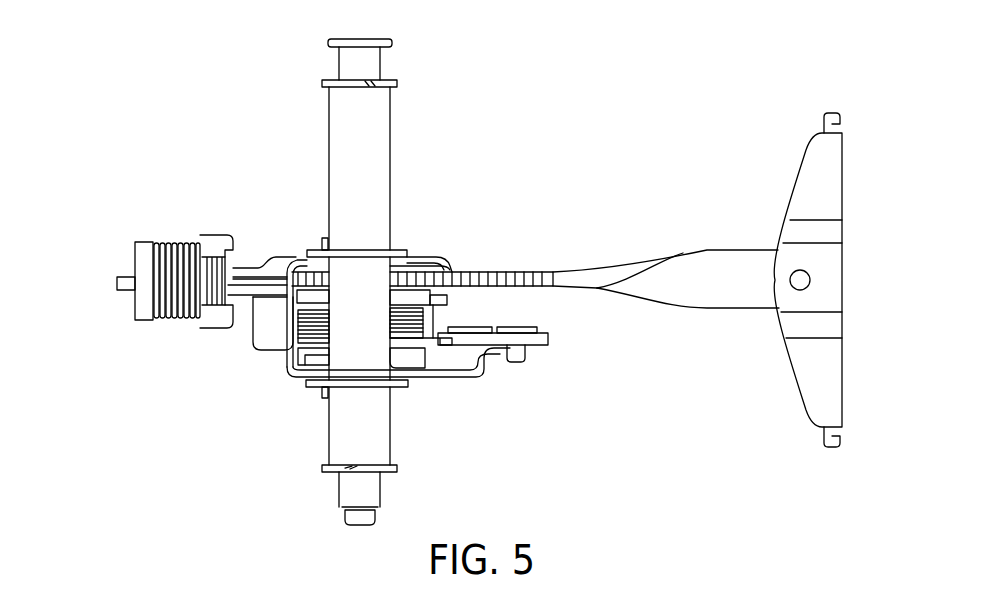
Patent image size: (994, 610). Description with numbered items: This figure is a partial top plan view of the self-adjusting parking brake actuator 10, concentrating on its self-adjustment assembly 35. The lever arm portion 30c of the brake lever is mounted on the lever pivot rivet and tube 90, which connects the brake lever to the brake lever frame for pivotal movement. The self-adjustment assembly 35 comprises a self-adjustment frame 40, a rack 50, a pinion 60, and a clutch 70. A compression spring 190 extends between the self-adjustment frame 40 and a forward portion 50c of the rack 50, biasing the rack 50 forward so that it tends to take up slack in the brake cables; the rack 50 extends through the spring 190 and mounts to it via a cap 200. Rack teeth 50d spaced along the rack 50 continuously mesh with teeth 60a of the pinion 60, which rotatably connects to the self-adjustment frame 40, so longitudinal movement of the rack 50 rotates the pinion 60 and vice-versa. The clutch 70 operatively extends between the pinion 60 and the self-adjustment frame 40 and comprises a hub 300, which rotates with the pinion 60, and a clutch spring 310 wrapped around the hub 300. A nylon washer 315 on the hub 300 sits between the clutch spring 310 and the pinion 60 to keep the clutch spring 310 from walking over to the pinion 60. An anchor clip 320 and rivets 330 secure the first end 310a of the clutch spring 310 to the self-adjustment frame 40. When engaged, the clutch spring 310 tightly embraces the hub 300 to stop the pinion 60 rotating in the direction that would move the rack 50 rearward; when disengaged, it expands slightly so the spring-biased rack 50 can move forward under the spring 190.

The self-adjusting parking brake actuator 10 is at (537, 152).
The lever arm portion 30c is at (398, 249).
The self-adjustment assembly 35 is at (247, 335).
The self-adjustment frame 40 is at (288, 252).
The rack 50 is at (597, 270).
The forward portion of the rack 50c is at (128, 290).
The rack teeth 50d is at (497, 271).
The pinion 60 is at (317, 280).
The teeth of the pinion 60a is at (403, 268).
The clutch 70 is at (433, 381).
The lever pivot rivet and tube 90 is at (380, 63).
The compression spring 190 is at (181, 243).
The cap 200 is at (145, 242).
The hub 300 is at (425, 318).
The clutch spring 310 is at (302, 332).
The first end of the clutch spring 310a is at (448, 342).
The nylon washer 315 is at (423, 298).
The anchor clip 320 is at (548, 338).
The rivets 330 is at (520, 362).